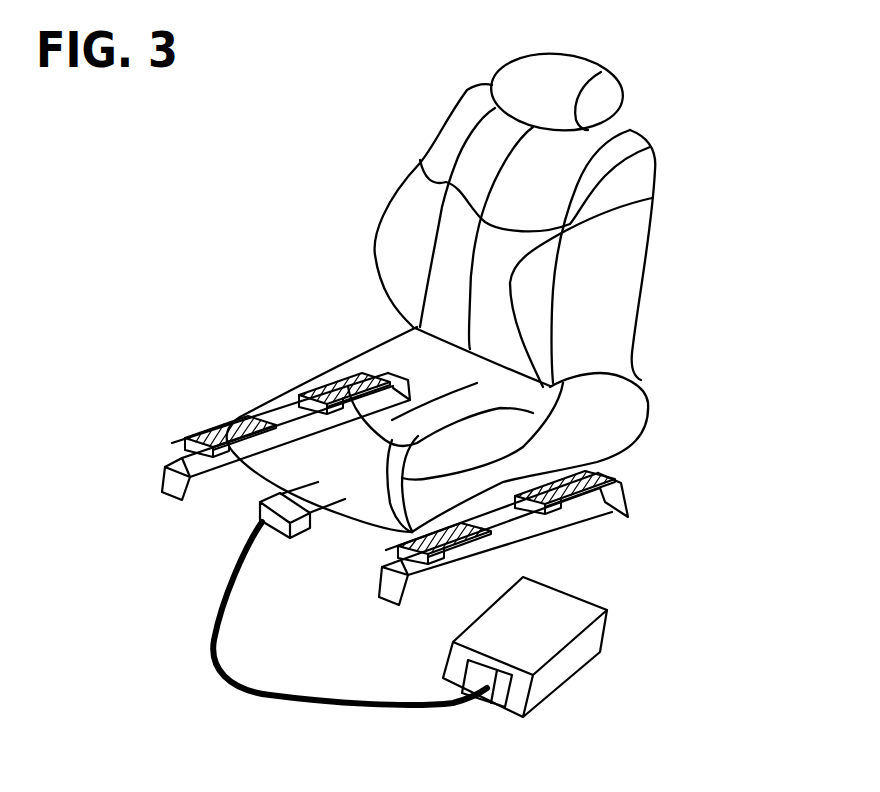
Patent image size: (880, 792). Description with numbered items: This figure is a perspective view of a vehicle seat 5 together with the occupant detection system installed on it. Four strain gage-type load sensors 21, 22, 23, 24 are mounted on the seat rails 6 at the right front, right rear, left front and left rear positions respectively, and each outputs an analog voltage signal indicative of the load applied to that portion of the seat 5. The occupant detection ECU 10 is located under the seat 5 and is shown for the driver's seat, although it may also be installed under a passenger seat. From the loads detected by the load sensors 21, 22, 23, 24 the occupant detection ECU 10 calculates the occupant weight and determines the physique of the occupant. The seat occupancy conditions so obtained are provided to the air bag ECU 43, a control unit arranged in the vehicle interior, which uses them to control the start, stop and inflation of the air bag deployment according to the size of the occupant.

The vehicle seat 5 is at (630, 193).
The seat rails 6 is at (180, 463).
The occupant detection electronic control unit 10 is at (260, 503).
The strain gage-type load sensor 21 is at (226, 432).
The strain gage-type load sensor 22 is at (330, 385).
The strain gage-type load sensor 23 is at (432, 553).
The strain gage-type load sensor 24 is at (567, 497).
The air bag ECU 43 is at (543, 598).